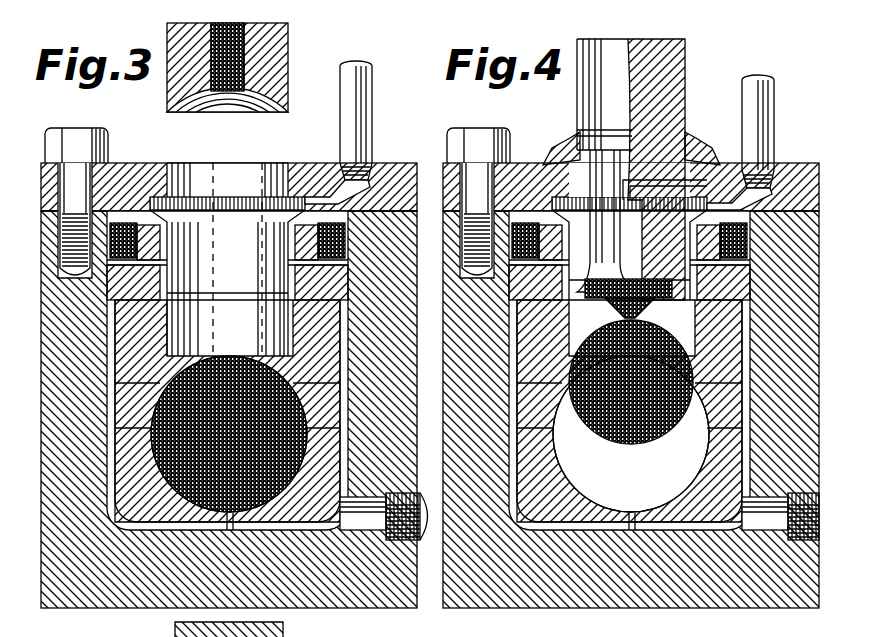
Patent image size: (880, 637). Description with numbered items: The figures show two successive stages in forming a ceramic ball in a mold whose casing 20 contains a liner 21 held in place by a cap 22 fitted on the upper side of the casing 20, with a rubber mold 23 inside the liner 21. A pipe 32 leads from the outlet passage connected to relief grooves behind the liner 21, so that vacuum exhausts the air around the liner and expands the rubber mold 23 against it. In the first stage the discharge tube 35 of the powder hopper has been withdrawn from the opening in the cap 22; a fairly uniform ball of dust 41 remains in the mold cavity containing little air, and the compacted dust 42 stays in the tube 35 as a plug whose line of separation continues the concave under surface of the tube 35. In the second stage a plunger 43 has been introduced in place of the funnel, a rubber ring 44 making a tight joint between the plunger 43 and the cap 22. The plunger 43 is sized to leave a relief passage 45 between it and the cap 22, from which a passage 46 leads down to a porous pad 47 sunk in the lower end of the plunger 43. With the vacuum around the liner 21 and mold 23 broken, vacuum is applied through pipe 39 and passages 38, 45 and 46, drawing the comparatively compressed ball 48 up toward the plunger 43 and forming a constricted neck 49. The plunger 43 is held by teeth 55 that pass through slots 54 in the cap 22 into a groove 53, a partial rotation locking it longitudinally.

In FIG. 3, the mold casing 20 is at (381, 603).
In FIG. 4, the mold casing 20 is at (628, 424).
In FIG. 4, the liner 21 is at (631, 434).
In FIG. 4, the cap 22 is at (631, 157).
In FIG. 3, the rubber mold 23 is at (290, 312).
In FIG. 4, the rubber mold 23 is at (629, 415).
In FIG. 3, the pipe 32 is at (384, 516).
In FIG. 4, the pipe 32 is at (780, 516).
In FIG. 3, the discharge tube 35 is at (280, 65).
In FIG. 4, the passage 38 is at (758, 174).
In FIG. 4, the pipe 39 is at (777, 131).
In FIG. 3, the ball of dust 41 is at (233, 372).
In FIG. 3, the dust within pipe 42 is at (230, 88).
In FIG. 4, the plunger 43 is at (644, 169).
In FIG. 4, the ring 44 is at (709, 142).
In FIG. 4, the relief passage 45 is at (681, 160).
In FIG. 4, the passage 46 is at (609, 195).
In FIG. 4, the porous pad 47 is at (641, 303).
In FIG. 4, the compressed ball 48 is at (631, 393).
In FIG. 4, the constricted neck 49 is at (597, 312).
In FIG. 3, the groove 53 is at (241, 218).
In FIG. 4, the groove 53 is at (617, 210).
In FIG. 3, the slots 54 is at (233, 172).
In FIG. 4, the teeth 55 is at (631, 127).